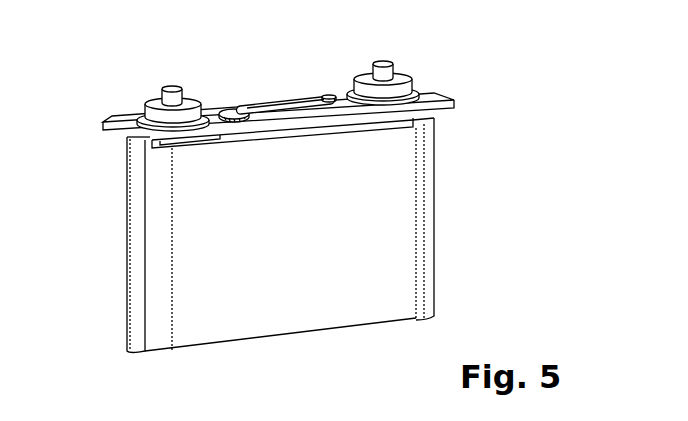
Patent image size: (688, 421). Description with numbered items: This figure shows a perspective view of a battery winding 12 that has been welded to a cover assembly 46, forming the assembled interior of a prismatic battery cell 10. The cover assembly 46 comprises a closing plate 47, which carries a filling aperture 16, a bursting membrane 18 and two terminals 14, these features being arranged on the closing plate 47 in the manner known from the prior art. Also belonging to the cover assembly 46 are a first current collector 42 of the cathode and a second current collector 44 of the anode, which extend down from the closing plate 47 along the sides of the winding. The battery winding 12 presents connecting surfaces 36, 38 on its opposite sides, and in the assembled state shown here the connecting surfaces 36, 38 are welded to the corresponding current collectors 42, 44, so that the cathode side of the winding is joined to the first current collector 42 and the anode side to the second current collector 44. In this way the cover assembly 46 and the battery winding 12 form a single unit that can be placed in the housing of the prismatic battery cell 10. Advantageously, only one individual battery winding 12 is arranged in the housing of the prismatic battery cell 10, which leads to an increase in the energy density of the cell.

The prismatic battery cell 10 is at (541, 68).
The battery winding 12 is at (287, 257).
The terminals 14 is at (160, 100).
The filling aperture 16 is at (222, 110).
The bursting membrane 18 is at (283, 100).
The closing plate 47 is at (322, 95).
The cover assembly 46 is at (458, 68).
The connecting surface 36 is at (94, 245).
The first current collector 42 is at (137, 186).
The connecting surface 38 is at (474, 219).
The second current collector 44 is at (428, 232).